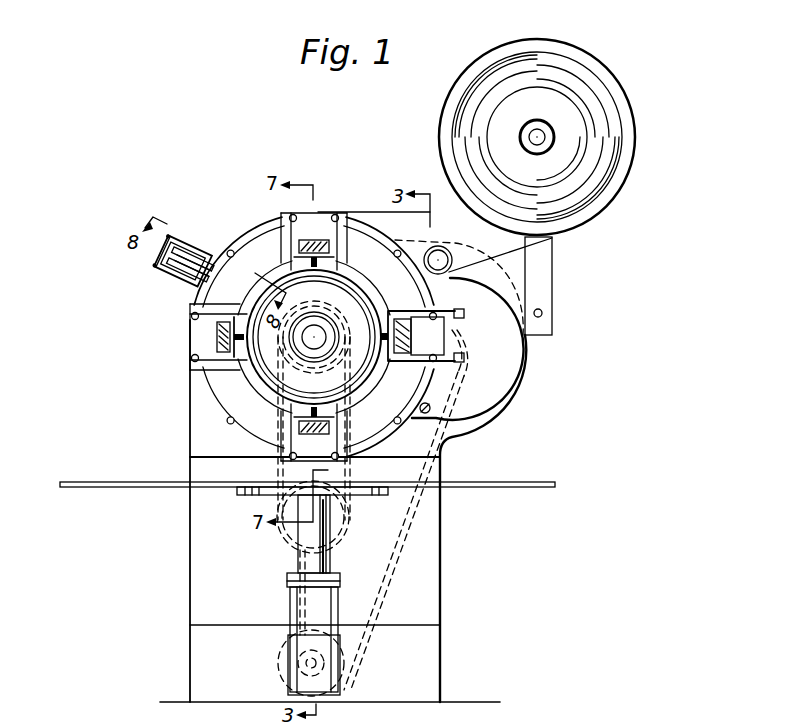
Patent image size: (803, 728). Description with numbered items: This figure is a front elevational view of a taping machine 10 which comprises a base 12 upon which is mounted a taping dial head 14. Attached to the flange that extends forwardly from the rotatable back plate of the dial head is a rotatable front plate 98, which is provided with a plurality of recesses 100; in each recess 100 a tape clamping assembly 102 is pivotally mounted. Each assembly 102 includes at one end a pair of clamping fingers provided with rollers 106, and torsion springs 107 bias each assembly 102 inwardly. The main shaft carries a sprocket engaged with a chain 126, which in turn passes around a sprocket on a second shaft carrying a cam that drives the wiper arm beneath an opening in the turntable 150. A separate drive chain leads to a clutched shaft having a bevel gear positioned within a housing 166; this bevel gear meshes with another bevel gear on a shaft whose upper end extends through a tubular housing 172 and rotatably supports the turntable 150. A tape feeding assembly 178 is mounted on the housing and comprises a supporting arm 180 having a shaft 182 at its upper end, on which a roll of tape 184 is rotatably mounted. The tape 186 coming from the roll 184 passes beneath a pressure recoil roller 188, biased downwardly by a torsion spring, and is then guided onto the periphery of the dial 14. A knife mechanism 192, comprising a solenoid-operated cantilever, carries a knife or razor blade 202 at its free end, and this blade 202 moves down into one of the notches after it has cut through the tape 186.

The taping machine 10 is at (297, 338).
The base 12 is at (441, 606).
The taping dial head 14 is at (232, 234).
The rotatable front plate 98 is at (356, 252).
The recesses 100 is at (318, 233).
The tape clamping assembly 102 is at (289, 236).
The rollers 106 is at (464, 314).
The torsion springs 107 is at (218, 323).
The chain 126 is at (284, 535).
The turntable 150 is at (490, 482).
The housing 166 is at (289, 606).
The tubular housing 172 is at (327, 553).
The tape feeding assembly 178 is at (641, 113).
The supporting arm 180 is at (553, 296).
The shaft 182 is at (545, 130).
The roll of tape 184 is at (520, 46).
The tape 186 is at (481, 262).
The pressure recoil roller 188 is at (446, 250).
The knife mechanism 192 is at (188, 233).
The knife or razor blade 202 is at (172, 284).